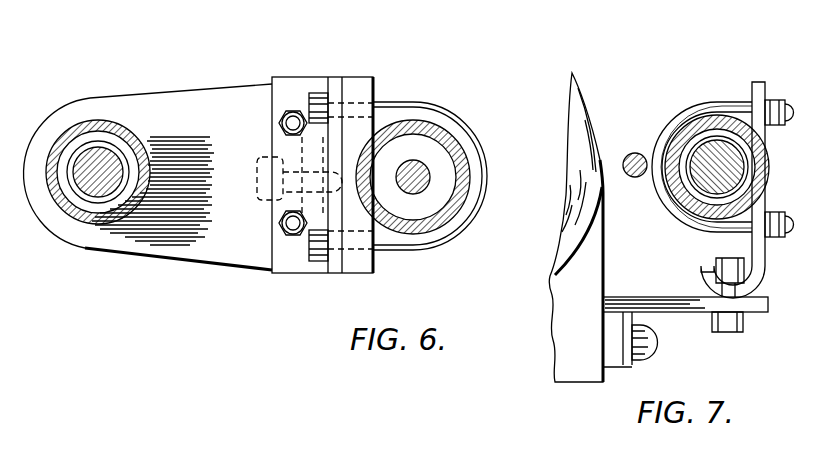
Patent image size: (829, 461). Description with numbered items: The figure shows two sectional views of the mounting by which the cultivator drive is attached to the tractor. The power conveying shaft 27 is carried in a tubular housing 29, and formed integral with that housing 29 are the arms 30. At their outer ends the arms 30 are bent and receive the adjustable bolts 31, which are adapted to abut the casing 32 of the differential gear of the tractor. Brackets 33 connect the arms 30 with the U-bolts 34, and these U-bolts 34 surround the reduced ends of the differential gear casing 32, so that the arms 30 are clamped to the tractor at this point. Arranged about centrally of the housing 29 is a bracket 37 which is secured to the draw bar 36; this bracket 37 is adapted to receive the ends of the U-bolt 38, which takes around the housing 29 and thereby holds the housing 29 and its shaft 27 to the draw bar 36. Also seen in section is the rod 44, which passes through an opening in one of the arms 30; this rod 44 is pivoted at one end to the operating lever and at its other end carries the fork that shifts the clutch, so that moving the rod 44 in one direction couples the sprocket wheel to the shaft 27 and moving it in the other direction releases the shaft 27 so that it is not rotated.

In FIG. 6, the power conveying shaft 27 is at (96, 168).
In FIG. 7, the power conveying shaft 27 is at (675, 205).
In FIG. 6, the tubular housing 29 is at (103, 223).
In FIG. 7, the tubular housing 29 is at (682, 135).
In FIG. 6, the arms 30 is at (211, 108).
In FIG. 6, the adjustable bolts 31 is at (257, 200).
In FIG. 6, the casing 32 is at (453, 137).
In FIG. 7, the casing 32 is at (583, 140).
In FIG. 6, the brackets 33 is at (298, 97).
In FIG. 6, the U-bolts 34 is at (480, 217).
In FIG. 7, the draw bar 36 is at (648, 305).
In FIG. 7, the bracket 37 is at (760, 270).
In FIG. 7, the U-bolt 38 is at (717, 103).
In FIG. 7, the rod 44 is at (623, 167).